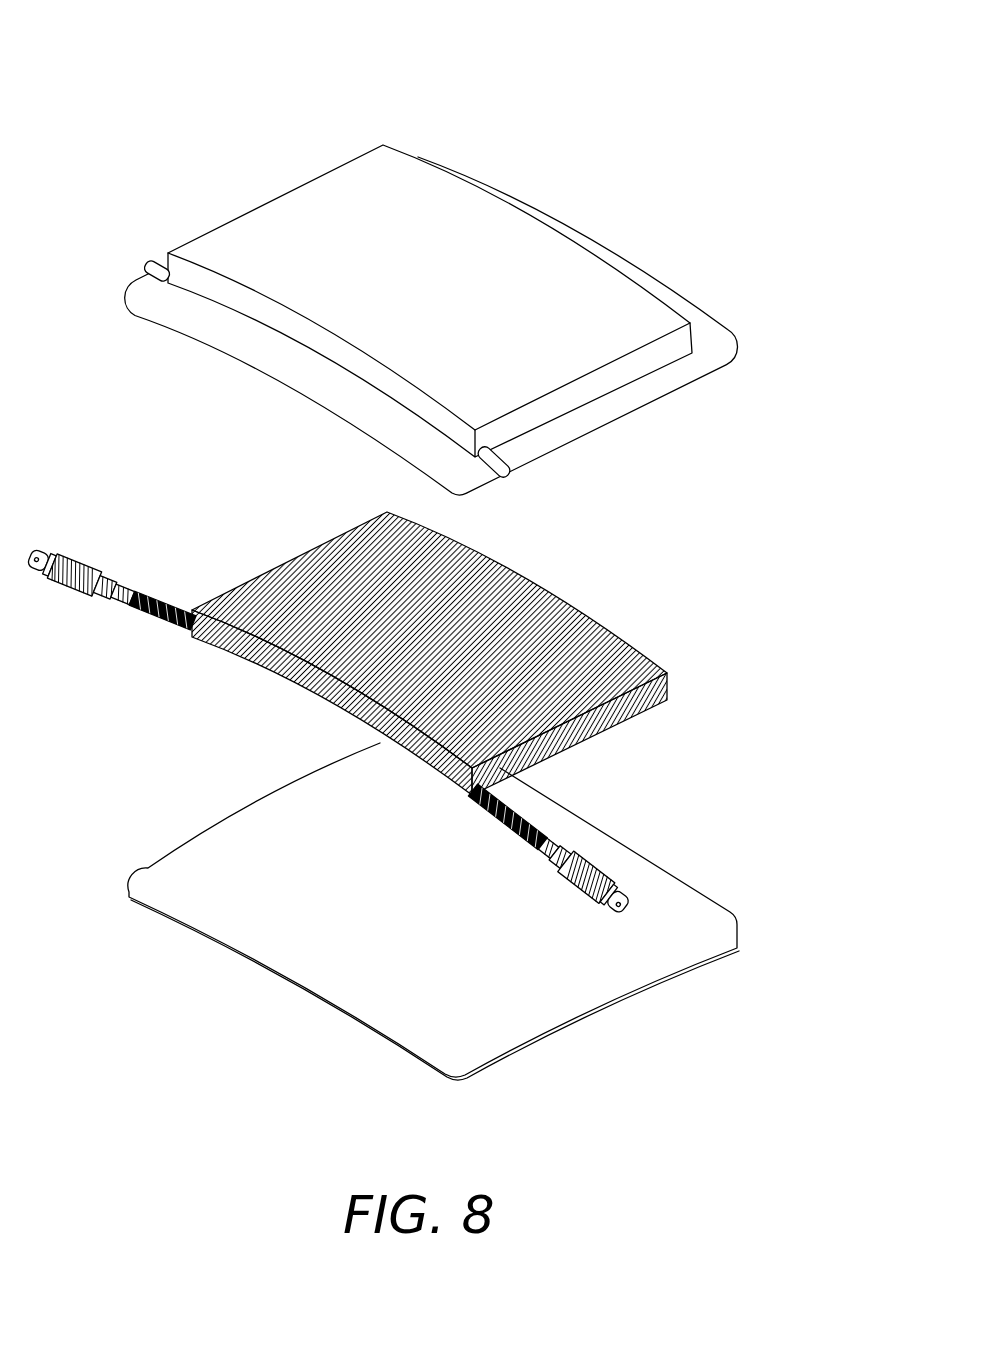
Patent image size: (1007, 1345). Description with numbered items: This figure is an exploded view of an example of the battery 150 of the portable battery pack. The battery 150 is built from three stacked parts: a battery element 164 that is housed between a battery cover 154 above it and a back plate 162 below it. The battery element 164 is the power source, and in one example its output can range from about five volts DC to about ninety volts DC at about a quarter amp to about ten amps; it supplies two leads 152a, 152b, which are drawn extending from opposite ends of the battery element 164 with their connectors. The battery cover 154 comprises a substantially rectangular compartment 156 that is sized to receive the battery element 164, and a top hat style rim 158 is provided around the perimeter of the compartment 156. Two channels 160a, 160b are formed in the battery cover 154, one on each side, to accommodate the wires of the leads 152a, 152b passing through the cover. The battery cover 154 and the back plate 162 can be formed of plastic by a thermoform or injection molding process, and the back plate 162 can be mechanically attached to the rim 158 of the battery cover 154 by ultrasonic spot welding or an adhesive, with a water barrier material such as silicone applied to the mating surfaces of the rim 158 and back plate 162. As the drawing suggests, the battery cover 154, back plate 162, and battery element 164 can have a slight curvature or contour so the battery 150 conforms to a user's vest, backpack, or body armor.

The battery 150 is at (122, 73).
The lead 152a is at (83, 563).
The lead 152b is at (563, 880).
The battery cover 154 is at (254, 186).
The compartment 156 is at (521, 212).
The rim 158 is at (668, 285).
The channel 160a is at (151, 263).
The channel 160b is at (502, 447).
The back plate 162 is at (687, 870).
The battery element 164 is at (613, 633).